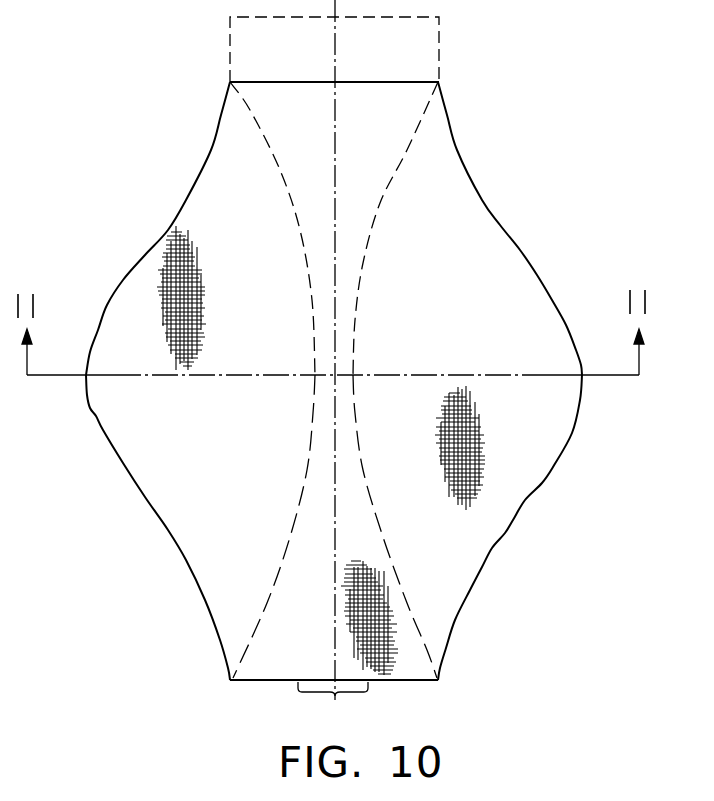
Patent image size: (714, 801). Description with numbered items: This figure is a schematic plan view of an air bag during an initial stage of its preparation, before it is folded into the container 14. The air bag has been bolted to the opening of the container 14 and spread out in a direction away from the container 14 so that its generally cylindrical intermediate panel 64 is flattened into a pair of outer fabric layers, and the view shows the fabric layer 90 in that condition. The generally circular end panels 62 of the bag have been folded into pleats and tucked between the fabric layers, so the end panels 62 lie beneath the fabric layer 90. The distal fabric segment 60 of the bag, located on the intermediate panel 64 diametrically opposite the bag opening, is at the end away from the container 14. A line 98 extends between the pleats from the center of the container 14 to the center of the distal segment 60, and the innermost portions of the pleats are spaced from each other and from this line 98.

The container 14 is at (216, 59).
The circular end panels 62 is at (153, 288).
The intermediate panel 64 is at (518, 460).
The fabric layer 90 is at (204, 518).
The line 98 is at (334, 630).
The distal fabric segment 60 is at (335, 696).